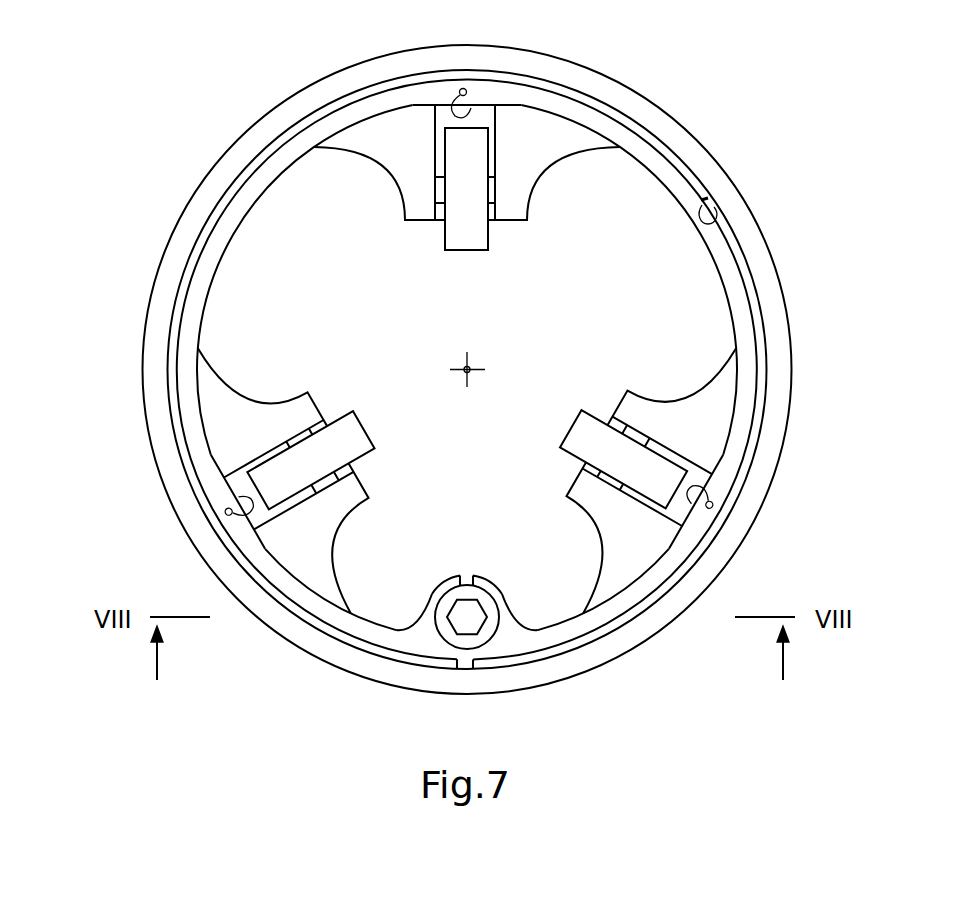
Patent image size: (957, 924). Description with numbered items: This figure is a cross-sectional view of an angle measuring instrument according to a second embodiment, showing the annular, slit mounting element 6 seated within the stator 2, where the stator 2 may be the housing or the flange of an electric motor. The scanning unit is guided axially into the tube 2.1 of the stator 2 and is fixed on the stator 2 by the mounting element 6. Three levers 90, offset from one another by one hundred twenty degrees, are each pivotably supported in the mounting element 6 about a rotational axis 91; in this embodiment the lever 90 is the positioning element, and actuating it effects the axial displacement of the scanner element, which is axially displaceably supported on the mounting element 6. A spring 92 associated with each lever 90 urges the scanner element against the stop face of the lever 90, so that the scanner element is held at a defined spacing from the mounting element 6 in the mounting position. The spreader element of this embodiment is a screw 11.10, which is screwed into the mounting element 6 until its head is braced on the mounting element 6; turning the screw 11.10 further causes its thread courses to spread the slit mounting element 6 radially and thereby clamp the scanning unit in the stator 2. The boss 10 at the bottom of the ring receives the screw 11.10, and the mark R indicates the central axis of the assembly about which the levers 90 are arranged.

The stator 2 is at (643, 112).
The tube 2.1 is at (716, 222).
The mounting element 6 is at (732, 270).
The locking screw boss 10 is at (463, 572).
The screw 11.10 is at (483, 625).
The lever 90 is at (482, 233).
The rotational axis 91 is at (440, 192).
The spring 92 is at (462, 90).
The center axis R is at (470, 366).